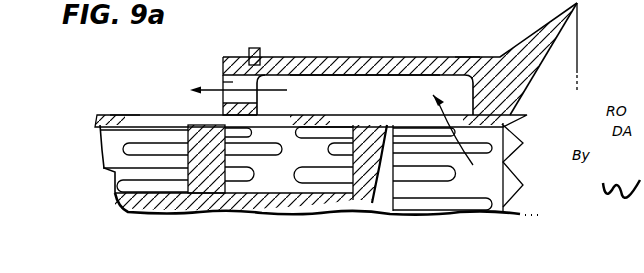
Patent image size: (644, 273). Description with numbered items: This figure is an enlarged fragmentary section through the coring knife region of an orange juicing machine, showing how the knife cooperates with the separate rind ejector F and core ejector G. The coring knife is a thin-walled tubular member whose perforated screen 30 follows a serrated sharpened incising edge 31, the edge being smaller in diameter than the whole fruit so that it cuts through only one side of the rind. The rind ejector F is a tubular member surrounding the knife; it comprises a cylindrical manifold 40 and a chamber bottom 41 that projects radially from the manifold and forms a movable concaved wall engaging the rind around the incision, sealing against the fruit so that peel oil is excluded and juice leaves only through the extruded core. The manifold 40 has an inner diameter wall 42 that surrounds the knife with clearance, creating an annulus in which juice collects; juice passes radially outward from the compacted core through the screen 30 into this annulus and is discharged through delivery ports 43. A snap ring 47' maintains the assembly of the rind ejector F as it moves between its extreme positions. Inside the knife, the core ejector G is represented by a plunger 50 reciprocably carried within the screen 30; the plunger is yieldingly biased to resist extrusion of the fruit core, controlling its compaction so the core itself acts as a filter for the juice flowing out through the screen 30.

The screen 30 is at (342, 118).
The sharpened incising edge 31 is at (520, 207).
The cylindrical manifold 40 is at (401, 48).
The chamber bottom 41 is at (553, 52).
The inner diameter wall 42 is at (322, 76).
The delivery ports 43 is at (233, 82).
The snap ring 47' is at (264, 44).
The plunger 50 is at (379, 127).
The rind ejector F is at (469, 47).
The core ejector G is at (129, 103).